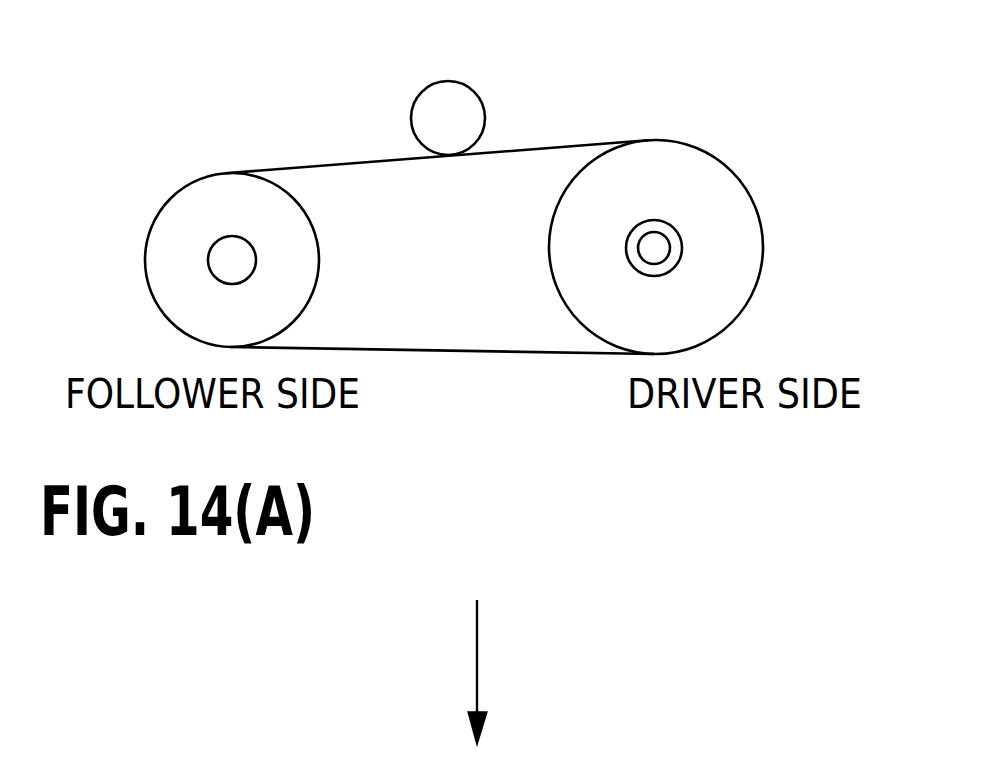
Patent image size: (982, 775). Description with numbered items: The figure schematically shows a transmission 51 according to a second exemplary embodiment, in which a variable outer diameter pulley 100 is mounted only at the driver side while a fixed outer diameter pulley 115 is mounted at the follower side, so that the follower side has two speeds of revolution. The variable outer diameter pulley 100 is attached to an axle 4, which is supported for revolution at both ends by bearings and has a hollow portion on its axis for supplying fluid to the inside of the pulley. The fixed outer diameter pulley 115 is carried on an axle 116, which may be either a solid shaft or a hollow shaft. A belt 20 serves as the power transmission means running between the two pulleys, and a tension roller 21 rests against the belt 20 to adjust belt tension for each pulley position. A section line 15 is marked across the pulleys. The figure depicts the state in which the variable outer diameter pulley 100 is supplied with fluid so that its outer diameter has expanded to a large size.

The axle 4 is at (648, 220).
The section line 15 is at (547, 247).
The belt 20 is at (417, 347).
The tension roller 21 is at (462, 81).
The transmission 51 is at (603, 80).
The variable outer diameter pulley 100 is at (745, 185).
The fixed outer diameter pulley 115 is at (143, 270).
The axle 116 is at (214, 243).